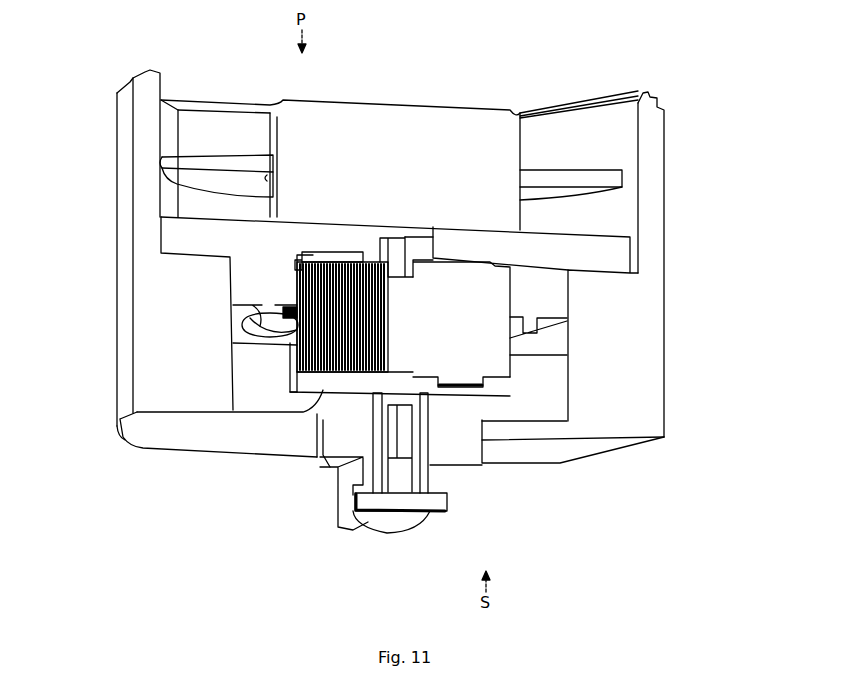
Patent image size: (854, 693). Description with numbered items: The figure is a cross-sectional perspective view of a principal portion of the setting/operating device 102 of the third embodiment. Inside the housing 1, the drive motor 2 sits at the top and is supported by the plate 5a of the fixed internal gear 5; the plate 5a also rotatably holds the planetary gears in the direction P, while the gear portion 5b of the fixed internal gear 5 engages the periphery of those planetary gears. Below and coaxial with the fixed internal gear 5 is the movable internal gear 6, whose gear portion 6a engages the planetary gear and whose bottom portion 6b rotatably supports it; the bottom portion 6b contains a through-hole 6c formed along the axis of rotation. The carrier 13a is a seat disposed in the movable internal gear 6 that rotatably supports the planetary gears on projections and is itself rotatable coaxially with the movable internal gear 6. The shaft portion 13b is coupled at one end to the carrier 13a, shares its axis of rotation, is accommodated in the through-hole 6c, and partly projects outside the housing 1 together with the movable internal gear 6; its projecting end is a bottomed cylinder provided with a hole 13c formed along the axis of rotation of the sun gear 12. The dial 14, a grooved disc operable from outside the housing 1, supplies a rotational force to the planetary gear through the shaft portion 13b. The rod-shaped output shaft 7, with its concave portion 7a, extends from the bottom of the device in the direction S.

The housing 1 is at (118, 110).
The drive motor 2 is at (388, 118).
The fixed internal gear 5 is at (52, 215).
The plate 5a is at (187, 232).
The gear portion 5b is at (245, 274).
The movable internal gear 6 is at (43, 432).
The gear portion 6a is at (290, 360).
The bottom portion 6b is at (300, 412).
The through-hole 6c is at (420, 456).
The output shaft 7 is at (338, 485).
The concave portion 7a is at (367, 517).
The sun gear 12 is at (400, 337).
The carrier 13a is at (383, 383).
The shaft portion 13b is at (420, 414).
The hole 13c is at (408, 428).
The dial 14 is at (437, 503).
The setting/operating device 102 is at (688, 60).